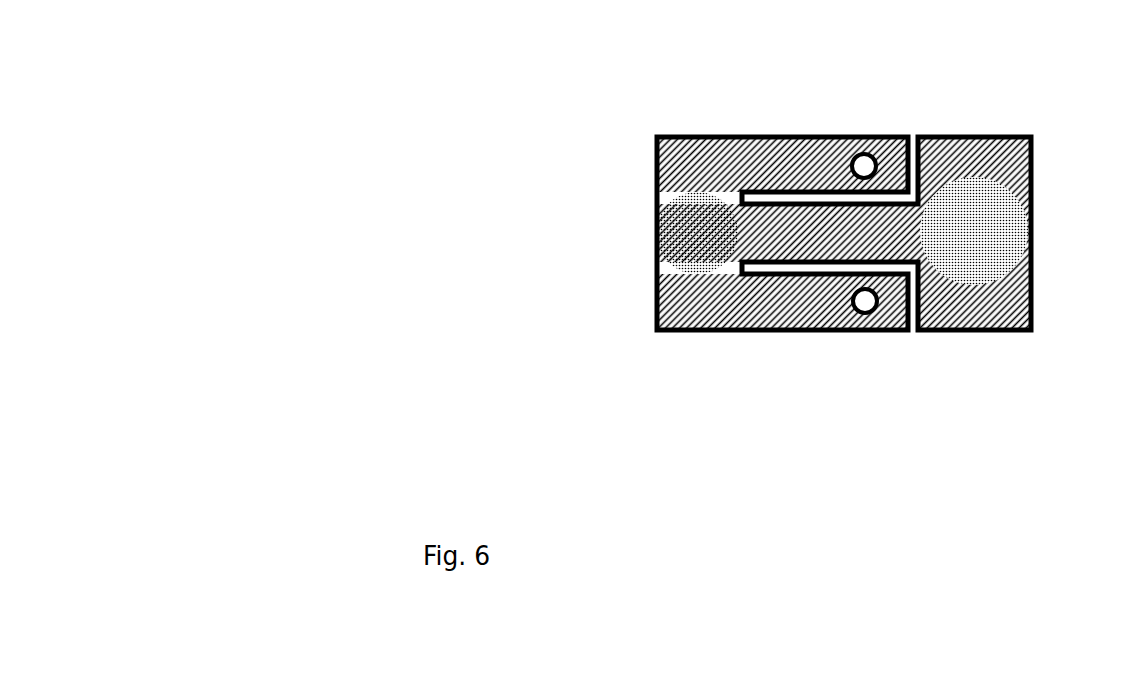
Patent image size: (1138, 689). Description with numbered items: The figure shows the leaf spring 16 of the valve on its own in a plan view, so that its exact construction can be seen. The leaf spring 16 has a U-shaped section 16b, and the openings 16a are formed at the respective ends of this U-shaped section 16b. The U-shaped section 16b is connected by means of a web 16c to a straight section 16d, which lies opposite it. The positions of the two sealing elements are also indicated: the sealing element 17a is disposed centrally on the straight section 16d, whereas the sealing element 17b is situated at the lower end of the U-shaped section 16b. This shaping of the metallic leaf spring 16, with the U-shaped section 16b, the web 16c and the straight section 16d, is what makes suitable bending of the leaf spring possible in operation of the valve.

The leaf spring 16 is at (961, 109).
The openings 16a is at (856, 137).
The U-shaped section 16b is at (730, 137).
The web 16c is at (762, 332).
The straight section 16d is at (1010, 137).
The sealing element 17a is at (1010, 220).
The sealing element 17b is at (672, 242).